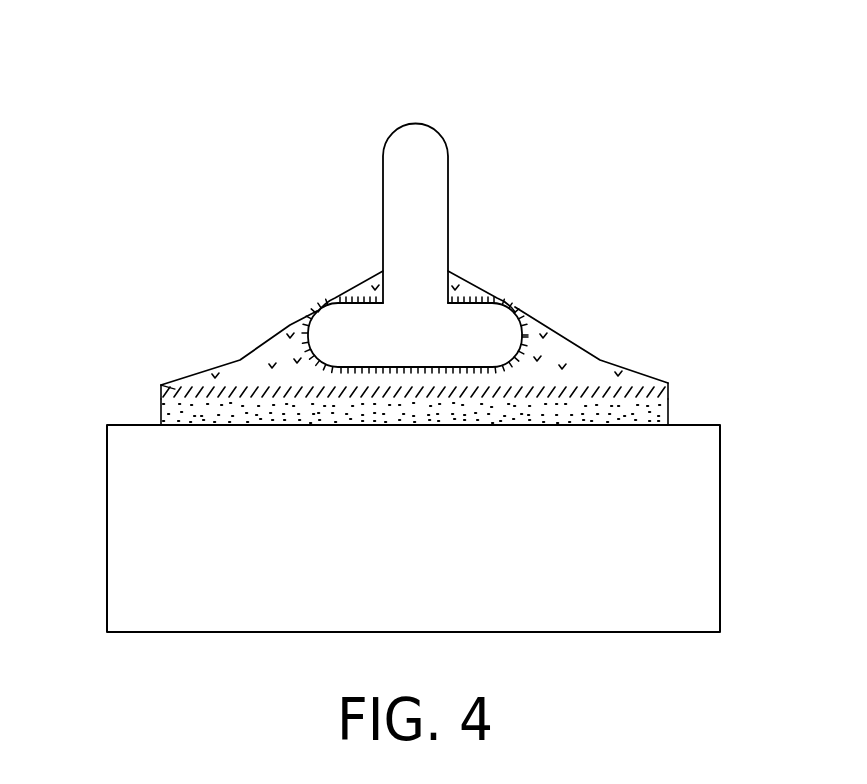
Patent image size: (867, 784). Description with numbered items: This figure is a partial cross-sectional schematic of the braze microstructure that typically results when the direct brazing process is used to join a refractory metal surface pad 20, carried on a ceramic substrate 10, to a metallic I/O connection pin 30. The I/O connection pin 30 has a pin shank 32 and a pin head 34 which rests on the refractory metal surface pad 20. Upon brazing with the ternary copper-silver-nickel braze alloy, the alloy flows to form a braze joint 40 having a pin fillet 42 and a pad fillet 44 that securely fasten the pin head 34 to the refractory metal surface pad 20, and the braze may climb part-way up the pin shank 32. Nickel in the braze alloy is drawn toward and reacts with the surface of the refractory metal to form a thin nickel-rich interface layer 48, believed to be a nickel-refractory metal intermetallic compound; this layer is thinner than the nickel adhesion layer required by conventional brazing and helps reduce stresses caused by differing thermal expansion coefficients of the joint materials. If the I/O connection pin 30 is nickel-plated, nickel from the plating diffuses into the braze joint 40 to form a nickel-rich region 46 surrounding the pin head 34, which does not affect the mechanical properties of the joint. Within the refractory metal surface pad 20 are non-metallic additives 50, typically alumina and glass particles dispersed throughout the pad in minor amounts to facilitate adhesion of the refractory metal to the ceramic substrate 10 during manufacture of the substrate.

The ceramic substrate 10 is at (690, 532).
The refractory metal surface pad 20 is at (668, 399).
The I/O connection pin 30 is at (462, 194).
The pin shank 32 is at (422, 147).
The pin head 34 is at (513, 303).
The braze joint 40 is at (418, 284).
The pin fillet 42 is at (370, 292).
The pad fillet 44 is at (253, 348).
The nickel-rich region 46 is at (290, 327).
The nickel-rich interface layer 48 is at (177, 390).
The non-metallic additives 50 is at (162, 415).